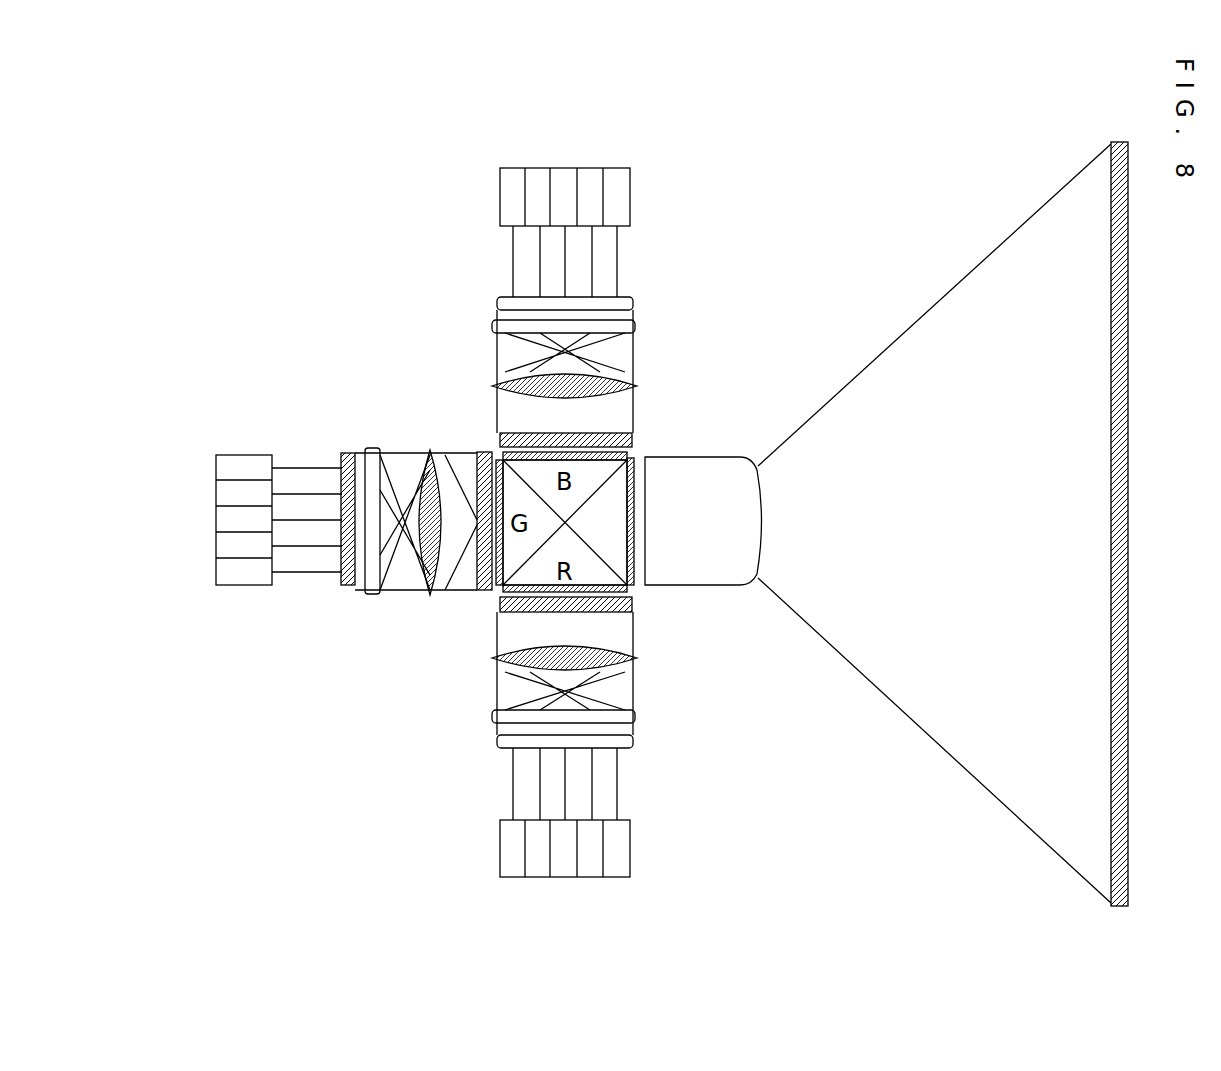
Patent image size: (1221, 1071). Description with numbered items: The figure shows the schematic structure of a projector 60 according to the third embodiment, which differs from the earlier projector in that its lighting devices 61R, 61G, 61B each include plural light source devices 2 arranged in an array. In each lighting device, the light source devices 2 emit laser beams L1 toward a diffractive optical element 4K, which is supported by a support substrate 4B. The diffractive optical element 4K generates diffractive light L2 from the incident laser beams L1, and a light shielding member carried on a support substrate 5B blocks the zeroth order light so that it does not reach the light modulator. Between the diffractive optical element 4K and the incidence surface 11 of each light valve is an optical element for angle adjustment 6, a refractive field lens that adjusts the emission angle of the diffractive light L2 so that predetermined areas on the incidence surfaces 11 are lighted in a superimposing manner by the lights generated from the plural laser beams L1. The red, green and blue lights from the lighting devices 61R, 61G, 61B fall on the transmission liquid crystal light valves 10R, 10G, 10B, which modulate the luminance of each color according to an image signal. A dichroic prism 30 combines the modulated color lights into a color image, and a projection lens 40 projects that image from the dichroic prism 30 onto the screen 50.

The light source device 2 is at (617, 168).
The laser beam L1 is at (617, 250).
The diffractive optical element 4K is at (633, 300).
The support substrate 4B is at (497, 302).
The support substrate 5B is at (492, 327).
The diffractive light L2 is at (635, 340).
The optical element for angle adjustment 6 is at (637, 385).
The light valve for B light 10B is at (500, 438).
The light valve for G light 10G is at (480, 590).
The light valve for R light 10R is at (632, 605).
The incidence surface 11 is at (496, 462).
The dichroic prism 30 is at (636, 458).
The projection lens 40 is at (713, 474).
The screen 50 is at (1111, 270).
The projector 60 is at (218, 198).
The lighting device for B light 61B is at (446, 236).
The lighting device for G light 61G is at (315, 654).
The lighting device for R light 61R is at (709, 720).